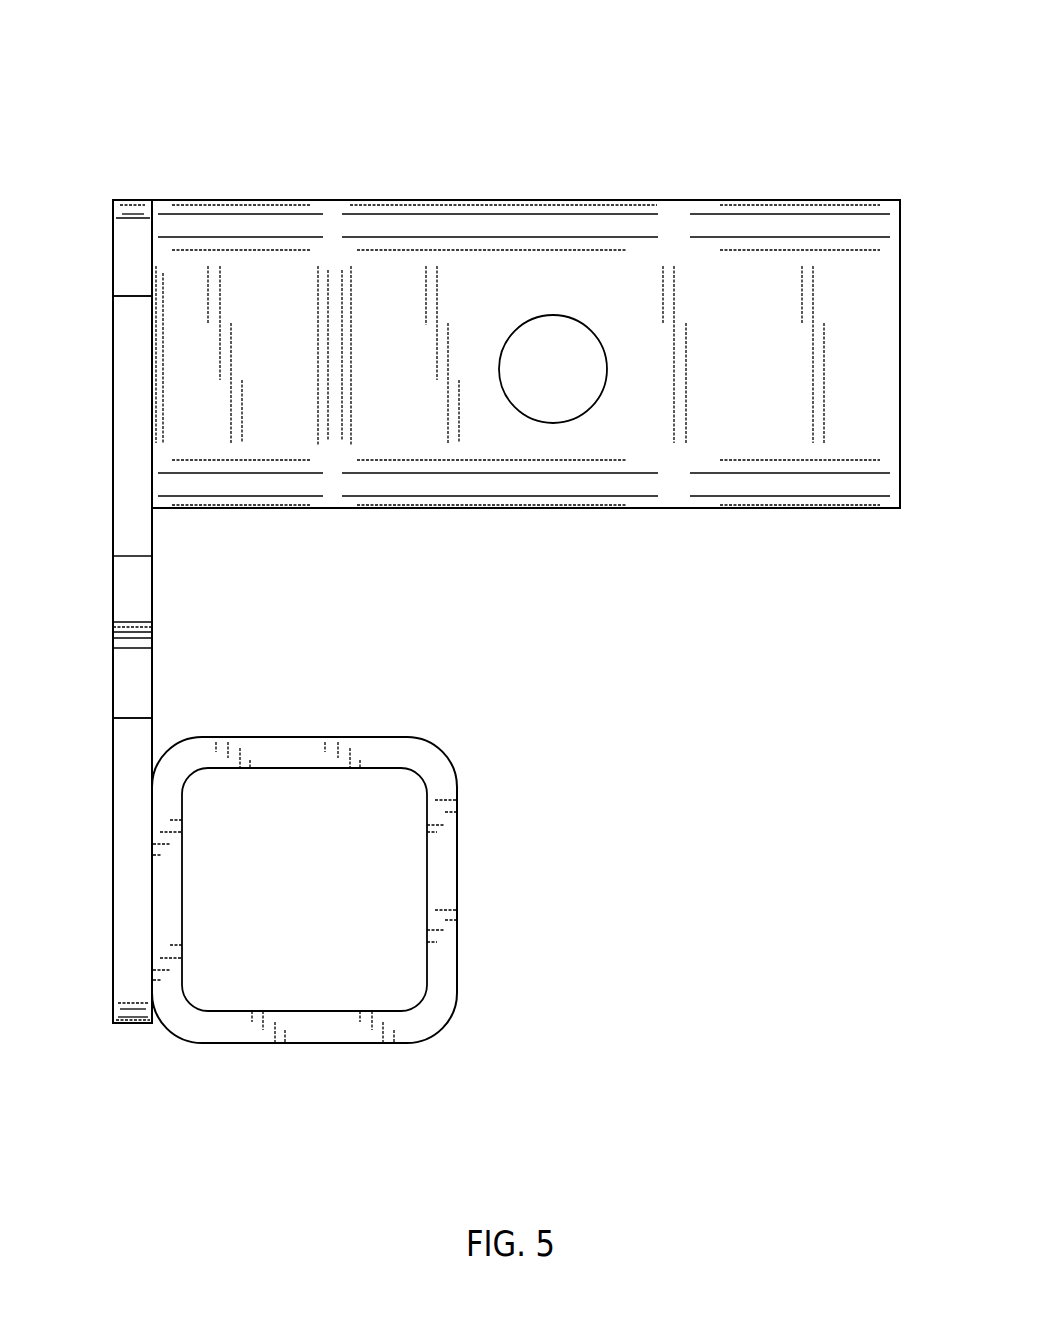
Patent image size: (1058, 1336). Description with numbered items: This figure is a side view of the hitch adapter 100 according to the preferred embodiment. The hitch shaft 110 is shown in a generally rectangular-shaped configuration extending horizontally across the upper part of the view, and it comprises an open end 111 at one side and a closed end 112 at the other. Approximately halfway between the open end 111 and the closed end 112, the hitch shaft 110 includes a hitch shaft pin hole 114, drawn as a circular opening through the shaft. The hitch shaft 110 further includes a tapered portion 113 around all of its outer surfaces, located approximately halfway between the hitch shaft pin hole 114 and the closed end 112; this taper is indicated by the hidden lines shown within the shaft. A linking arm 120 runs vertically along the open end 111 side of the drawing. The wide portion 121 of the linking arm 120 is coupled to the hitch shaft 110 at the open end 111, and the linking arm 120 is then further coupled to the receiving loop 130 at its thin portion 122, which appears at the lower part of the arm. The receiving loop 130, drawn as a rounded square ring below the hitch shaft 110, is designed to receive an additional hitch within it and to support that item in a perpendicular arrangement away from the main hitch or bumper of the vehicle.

The hitch adapter 100 is at (227, 158).
The hitch shaft 110 is at (698, 510).
The open end 111 is at (901, 302).
The closed end 112 is at (153, 199).
The tapered portion 113 is at (275, 278).
The hitch shaft pin hole 114 is at (553, 392).
The linking arm 120 is at (107, 630).
The wide portion 121 is at (113, 518).
The thin portion 122 is at (113, 900).
The receiving loop 130 is at (458, 812).